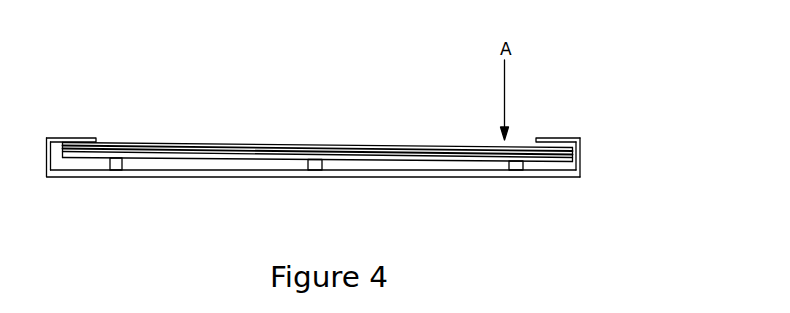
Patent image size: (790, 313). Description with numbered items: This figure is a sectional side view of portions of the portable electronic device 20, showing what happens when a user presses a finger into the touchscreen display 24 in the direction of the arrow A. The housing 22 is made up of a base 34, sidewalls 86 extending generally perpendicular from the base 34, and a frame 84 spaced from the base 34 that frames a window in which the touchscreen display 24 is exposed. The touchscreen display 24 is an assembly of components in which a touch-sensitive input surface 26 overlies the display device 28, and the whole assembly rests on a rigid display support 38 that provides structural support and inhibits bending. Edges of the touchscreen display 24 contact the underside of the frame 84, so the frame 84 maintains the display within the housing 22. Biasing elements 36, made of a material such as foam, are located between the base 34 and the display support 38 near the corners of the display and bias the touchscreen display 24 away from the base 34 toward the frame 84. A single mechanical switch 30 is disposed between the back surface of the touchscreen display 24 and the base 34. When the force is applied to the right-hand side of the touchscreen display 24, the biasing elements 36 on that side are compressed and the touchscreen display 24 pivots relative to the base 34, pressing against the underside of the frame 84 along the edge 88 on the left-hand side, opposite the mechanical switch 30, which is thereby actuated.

The portable electronic device 20 is at (556, 62).
The housing 22 is at (579, 165).
The touchscreen display 24 is at (140, 129).
The touch-sensitive input surface 26 is at (370, 146).
The display device 28 is at (313, 149).
The single mechanical switch 30 is at (314, 164).
The base 34 is at (484, 171).
The biasing elements 36 is at (116, 166).
The display support 38 is at (195, 156).
The frame 84 is at (556, 139).
The sidewalls 86 is at (580, 160).
The edge 88 is at (63, 139).